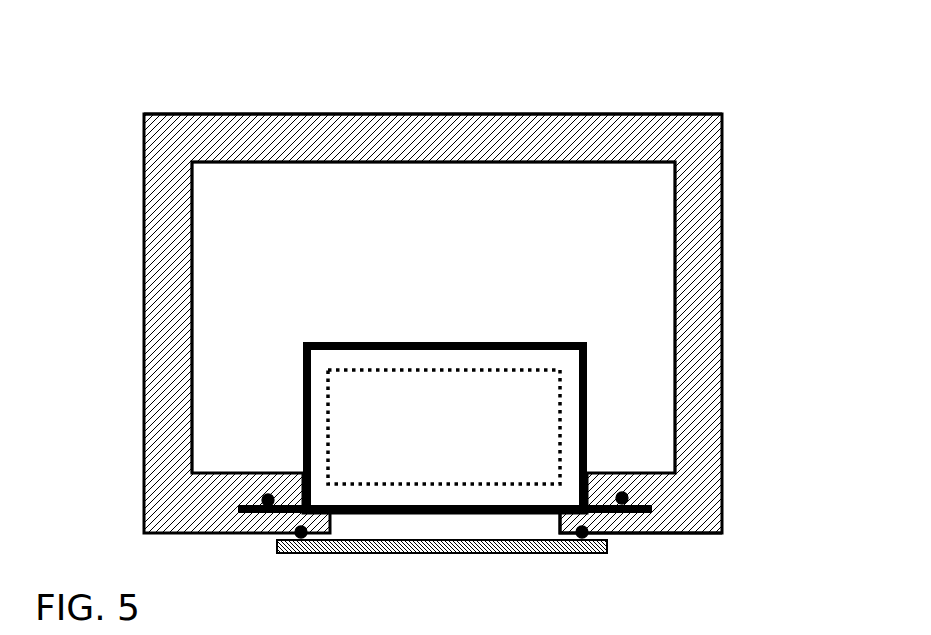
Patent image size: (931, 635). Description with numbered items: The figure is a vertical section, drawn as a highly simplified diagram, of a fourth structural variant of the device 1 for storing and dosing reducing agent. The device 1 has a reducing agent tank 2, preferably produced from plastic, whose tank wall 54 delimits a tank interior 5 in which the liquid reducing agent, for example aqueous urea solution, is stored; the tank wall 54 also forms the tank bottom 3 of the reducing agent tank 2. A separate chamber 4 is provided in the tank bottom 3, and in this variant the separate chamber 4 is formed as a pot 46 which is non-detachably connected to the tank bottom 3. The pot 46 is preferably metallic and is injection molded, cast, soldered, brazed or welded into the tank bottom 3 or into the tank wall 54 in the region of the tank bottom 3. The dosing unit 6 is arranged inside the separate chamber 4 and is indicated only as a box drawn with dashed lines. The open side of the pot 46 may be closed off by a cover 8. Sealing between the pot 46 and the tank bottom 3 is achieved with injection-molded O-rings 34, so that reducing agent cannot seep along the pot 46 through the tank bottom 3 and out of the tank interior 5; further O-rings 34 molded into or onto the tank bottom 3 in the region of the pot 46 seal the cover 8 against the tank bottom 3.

The device 1 is at (769, 137).
The reducing agent tank 2 is at (723, 240).
The tank bottom 3 is at (640, 533).
The separate chamber 4 is at (587, 380).
The tank interior 5 is at (273, 233).
The dosing unit 6 is at (492, 370).
The cover 8 is at (550, 557).
The O-rings 34 is at (624, 493).
The pot 46 is at (473, 513).
The tank wall 54 is at (581, 114).